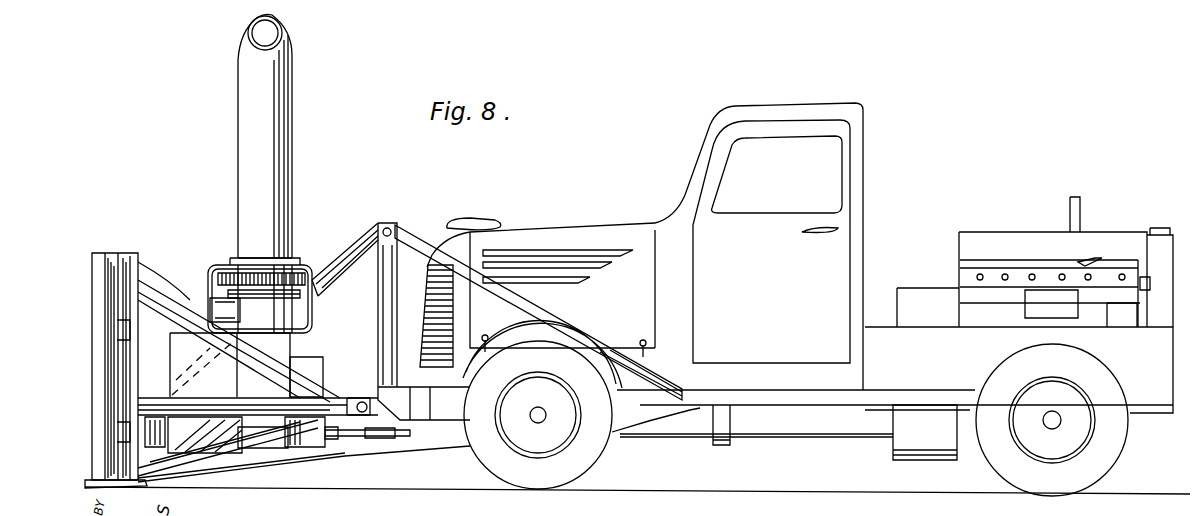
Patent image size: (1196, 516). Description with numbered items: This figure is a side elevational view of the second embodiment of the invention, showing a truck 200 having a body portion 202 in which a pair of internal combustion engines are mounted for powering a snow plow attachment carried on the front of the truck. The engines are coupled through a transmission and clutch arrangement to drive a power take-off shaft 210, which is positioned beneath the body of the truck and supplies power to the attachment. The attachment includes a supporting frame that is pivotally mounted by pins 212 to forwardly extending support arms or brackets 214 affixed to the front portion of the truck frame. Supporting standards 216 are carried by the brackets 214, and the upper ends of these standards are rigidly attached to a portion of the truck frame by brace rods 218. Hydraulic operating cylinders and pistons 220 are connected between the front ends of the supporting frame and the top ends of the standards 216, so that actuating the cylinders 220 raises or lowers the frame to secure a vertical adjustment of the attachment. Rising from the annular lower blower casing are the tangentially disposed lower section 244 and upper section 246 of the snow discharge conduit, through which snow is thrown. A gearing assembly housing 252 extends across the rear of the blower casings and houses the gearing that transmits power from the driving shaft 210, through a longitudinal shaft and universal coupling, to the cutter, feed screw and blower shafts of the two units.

The truck 200 is at (513, 238).
The body portion 202 is at (877, 332).
The power take-off shaft 210 is at (765, 440).
The pins 212 is at (362, 399).
The support arms or brackets 214 is at (412, 400).
The supporting standards 216 is at (383, 296).
The brace rods 218 is at (527, 308).
The hydraulic operating cylinders and pistons 220 is at (343, 262).
The lower section of snow discharge conduit 244 is at (210, 290).
The upper section of snow discharge conduit 246 is at (273, 172).
The gearing assembly housing 252 is at (310, 363).